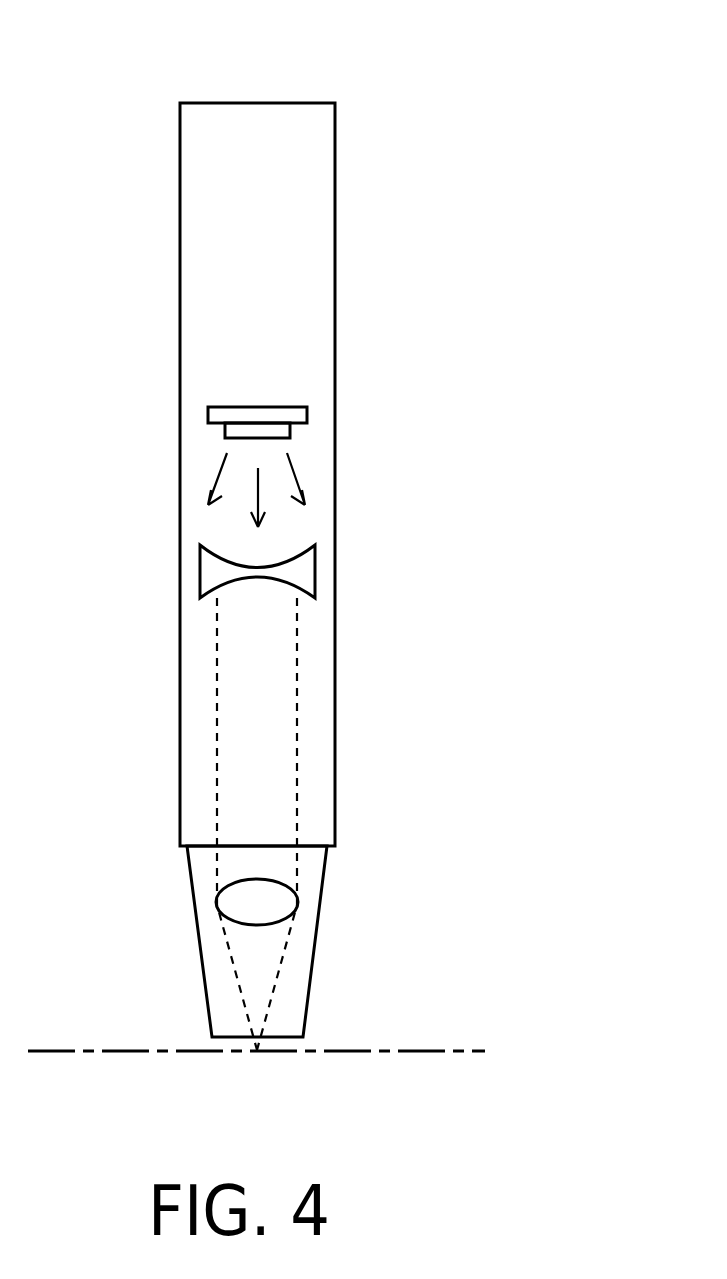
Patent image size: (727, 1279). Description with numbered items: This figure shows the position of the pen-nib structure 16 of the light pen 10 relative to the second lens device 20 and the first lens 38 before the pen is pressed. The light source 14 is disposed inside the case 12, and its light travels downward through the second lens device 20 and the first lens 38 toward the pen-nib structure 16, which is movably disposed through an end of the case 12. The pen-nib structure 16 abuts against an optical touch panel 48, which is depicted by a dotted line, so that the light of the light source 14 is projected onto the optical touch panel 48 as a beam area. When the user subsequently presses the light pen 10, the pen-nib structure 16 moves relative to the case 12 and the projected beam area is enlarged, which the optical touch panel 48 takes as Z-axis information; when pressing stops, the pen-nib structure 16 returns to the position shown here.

The light pen 10 is at (470, 128).
The case 12 is at (180, 173).
The light source 14 is at (234, 413).
The pen-nib structure 16 is at (313, 970).
The second lens device 20 is at (215, 570).
The first lens 38 is at (247, 902).
The optical touch panel 48 is at (488, 1028).